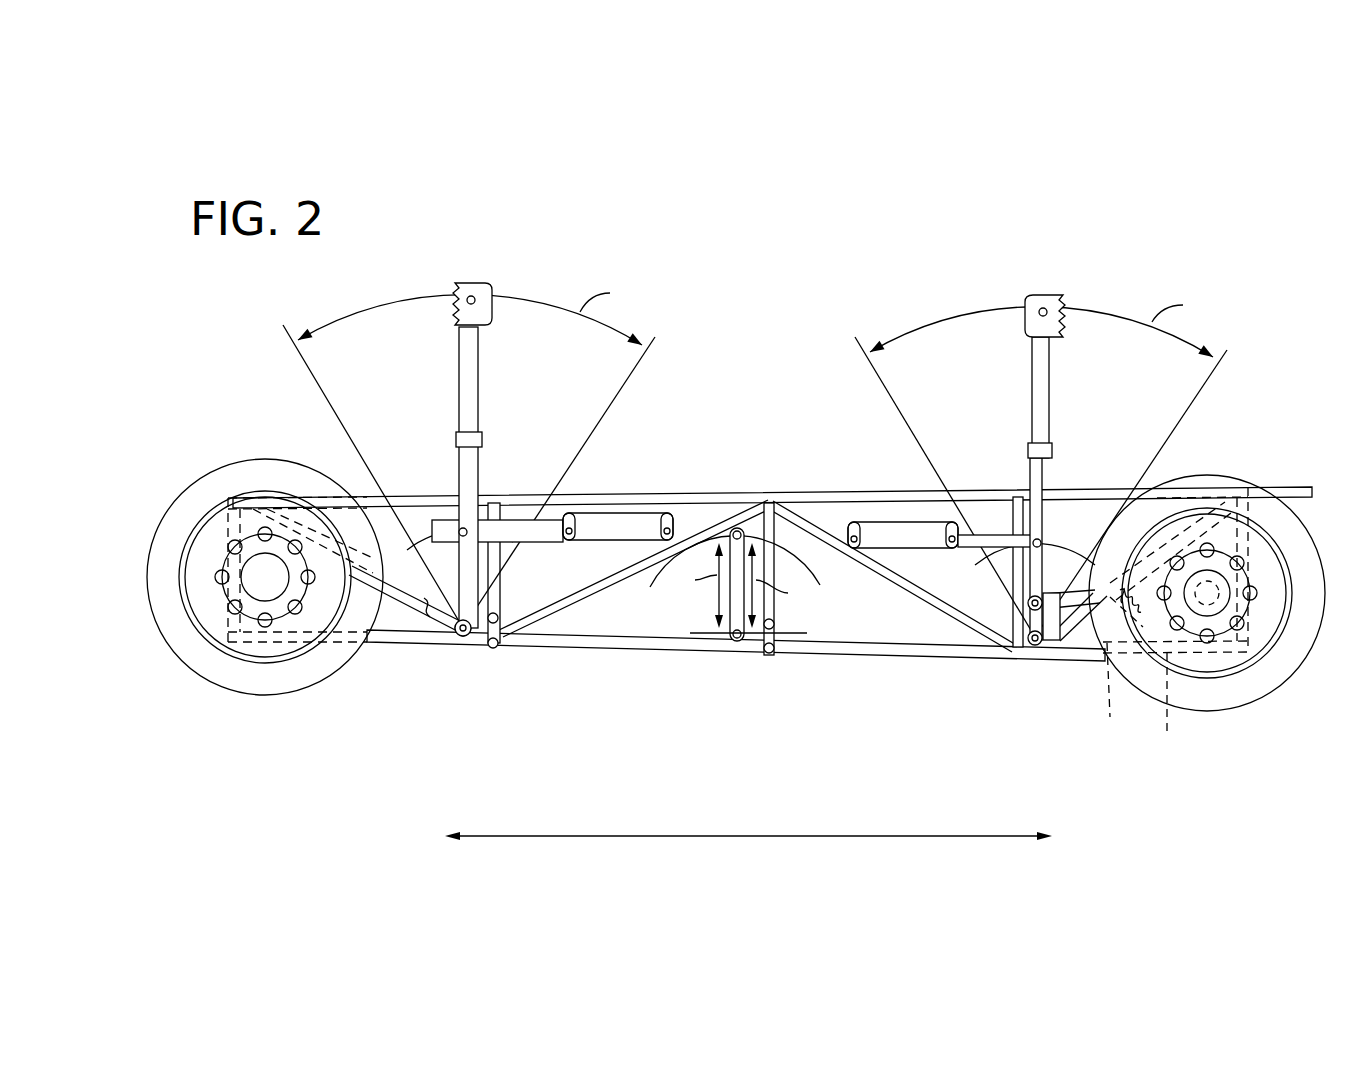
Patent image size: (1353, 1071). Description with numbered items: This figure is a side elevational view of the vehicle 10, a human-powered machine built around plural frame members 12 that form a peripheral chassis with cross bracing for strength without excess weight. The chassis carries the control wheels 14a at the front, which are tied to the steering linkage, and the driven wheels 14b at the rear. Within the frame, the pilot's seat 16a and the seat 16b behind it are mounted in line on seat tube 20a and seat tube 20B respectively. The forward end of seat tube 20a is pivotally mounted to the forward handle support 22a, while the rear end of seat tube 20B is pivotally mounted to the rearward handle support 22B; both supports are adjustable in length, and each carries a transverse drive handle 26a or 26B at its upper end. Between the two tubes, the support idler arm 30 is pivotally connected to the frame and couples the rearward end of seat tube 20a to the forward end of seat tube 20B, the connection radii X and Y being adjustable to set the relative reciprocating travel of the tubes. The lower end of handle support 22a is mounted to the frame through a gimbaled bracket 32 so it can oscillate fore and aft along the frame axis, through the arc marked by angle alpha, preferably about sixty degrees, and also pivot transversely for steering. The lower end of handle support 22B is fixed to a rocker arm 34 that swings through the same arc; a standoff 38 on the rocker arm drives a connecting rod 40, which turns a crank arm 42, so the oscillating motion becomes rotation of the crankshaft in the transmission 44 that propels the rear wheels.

The vehicle 10 is at (681, 92).
The frame members 12 is at (613, 497).
The front wheels 14a is at (237, 673).
The rear wheels 14b is at (1266, 698).
The seat 16a is at (598, 525).
The seat 16b is at (902, 520).
The seat tube 20a is at (540, 534).
The seat tube 20B is at (973, 547).
The handle support member 22a is at (472, 405).
The handle support member 22B is at (1045, 415).
The drive handle 26a is at (477, 283).
The drive handle 26B is at (1047, 300).
The support idler arm 30 is at (730, 594).
The gimbaled bracket 32 is at (460, 640).
The rocker arm 34 is at (1052, 646).
The standoff 38 is at (1006, 650).
The connecting rod 40 is at (1057, 590).
The crank arm 42 is at (1116, 662).
The transmission 44 is at (1167, 707).